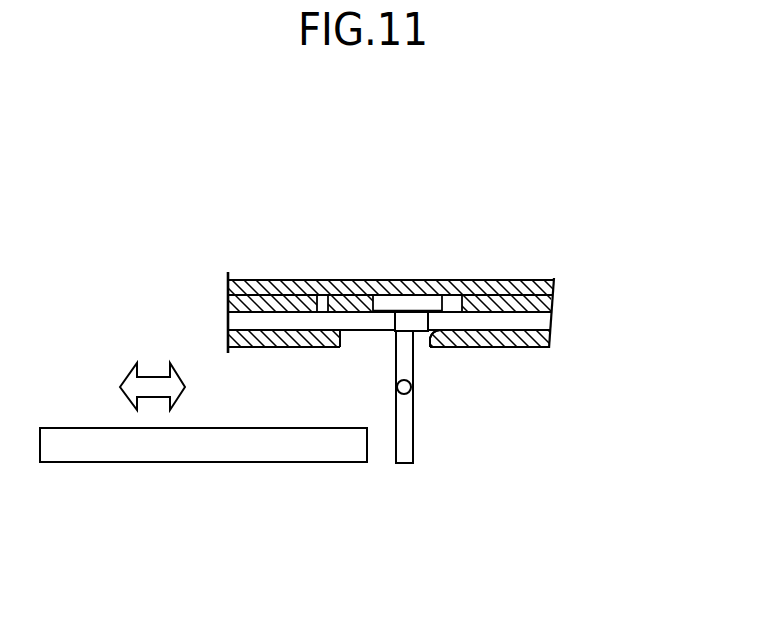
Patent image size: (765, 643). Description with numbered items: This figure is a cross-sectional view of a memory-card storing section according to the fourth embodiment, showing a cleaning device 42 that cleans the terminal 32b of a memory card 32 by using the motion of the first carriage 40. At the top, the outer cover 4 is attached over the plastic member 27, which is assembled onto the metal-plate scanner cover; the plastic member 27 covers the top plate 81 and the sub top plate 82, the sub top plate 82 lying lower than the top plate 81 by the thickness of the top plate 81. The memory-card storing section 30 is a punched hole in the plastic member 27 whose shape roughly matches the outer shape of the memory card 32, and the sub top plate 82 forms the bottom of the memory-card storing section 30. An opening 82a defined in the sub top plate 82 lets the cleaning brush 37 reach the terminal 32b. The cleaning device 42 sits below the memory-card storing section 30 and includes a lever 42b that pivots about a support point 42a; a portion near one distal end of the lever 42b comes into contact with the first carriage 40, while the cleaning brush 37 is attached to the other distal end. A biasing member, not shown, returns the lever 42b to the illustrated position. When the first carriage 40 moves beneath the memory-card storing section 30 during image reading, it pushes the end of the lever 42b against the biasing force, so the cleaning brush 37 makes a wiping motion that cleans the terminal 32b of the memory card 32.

The outer cover 4 is at (333, 281).
The plastic member 27 is at (546, 290).
The memory-card storing section 30 is at (318, 296).
The memory card 32 is at (383, 293).
The terminal 32b is at (366, 305).
The cleaning brush 37 is at (433, 337).
The first carriage 40 is at (137, 463).
The cleaning device 42 is at (430, 430).
The support point 42a is at (413, 388).
The lever 42b is at (413, 464).
The top plate 81 is at (232, 322).
The sub top plate 82 is at (259, 348).
The opening 82a is at (354, 337).